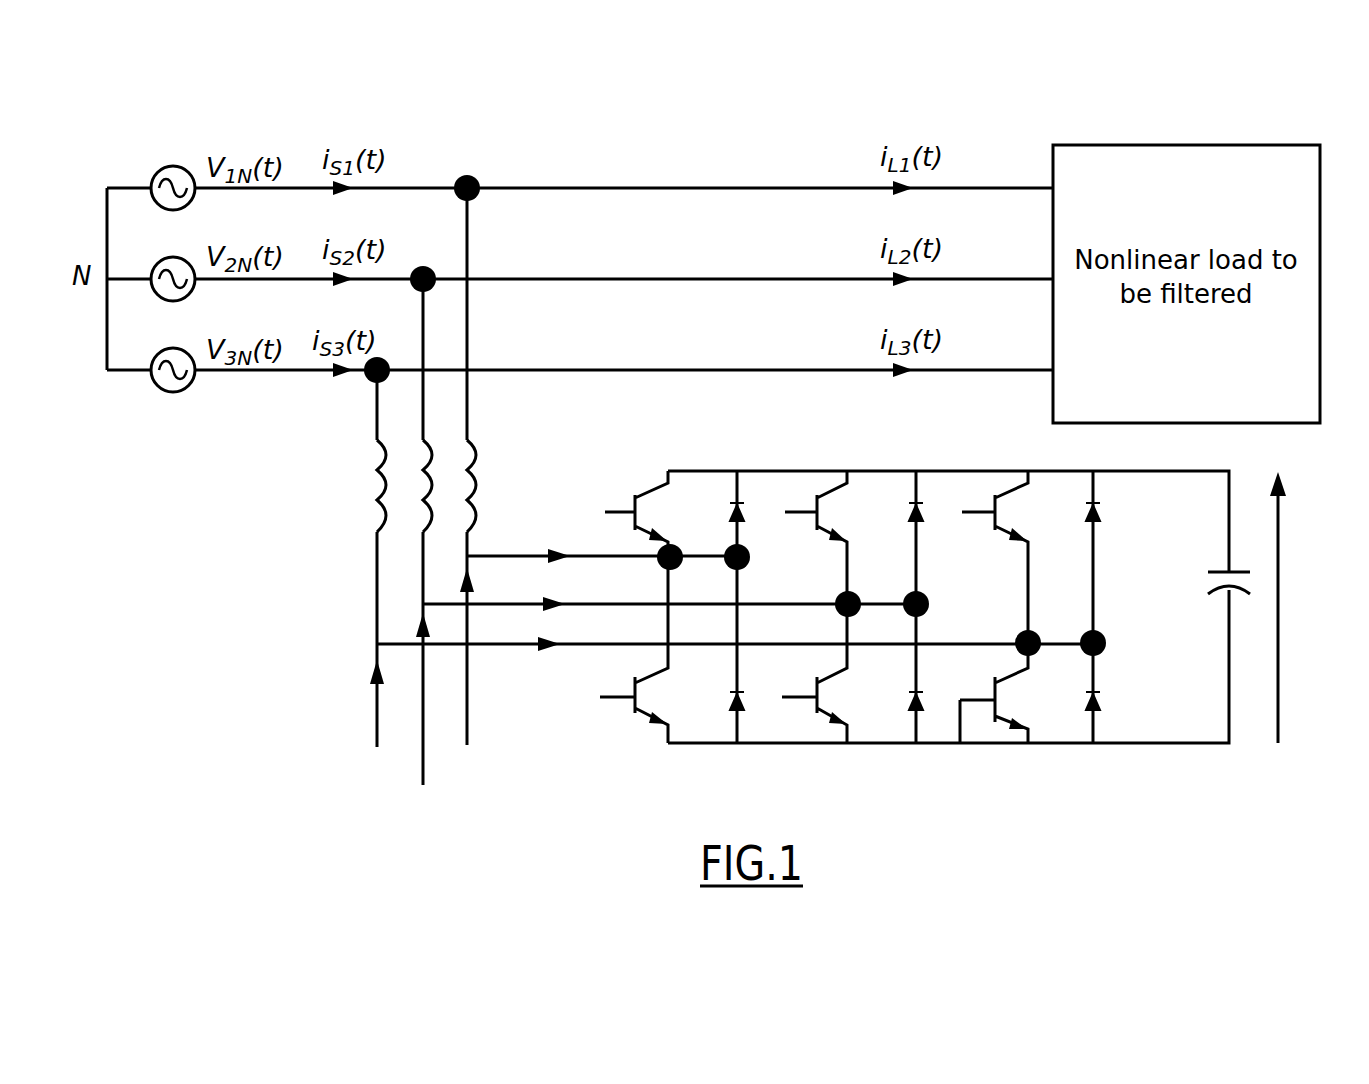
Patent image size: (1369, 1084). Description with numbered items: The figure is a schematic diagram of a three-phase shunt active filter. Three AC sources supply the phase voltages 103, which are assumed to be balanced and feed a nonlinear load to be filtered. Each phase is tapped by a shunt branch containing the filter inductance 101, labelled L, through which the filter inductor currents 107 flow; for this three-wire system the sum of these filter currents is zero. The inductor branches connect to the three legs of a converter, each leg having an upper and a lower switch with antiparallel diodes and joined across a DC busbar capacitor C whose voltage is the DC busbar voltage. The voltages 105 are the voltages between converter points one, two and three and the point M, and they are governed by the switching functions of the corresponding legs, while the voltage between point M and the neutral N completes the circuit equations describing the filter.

The filter inductance 101 is at (507, 485).
The phase voltages 103 is at (242, 143).
The voltages between points 1, 2, 3 and M 105 is at (343, 780).
The filter inductor currents 107 is at (513, 651).